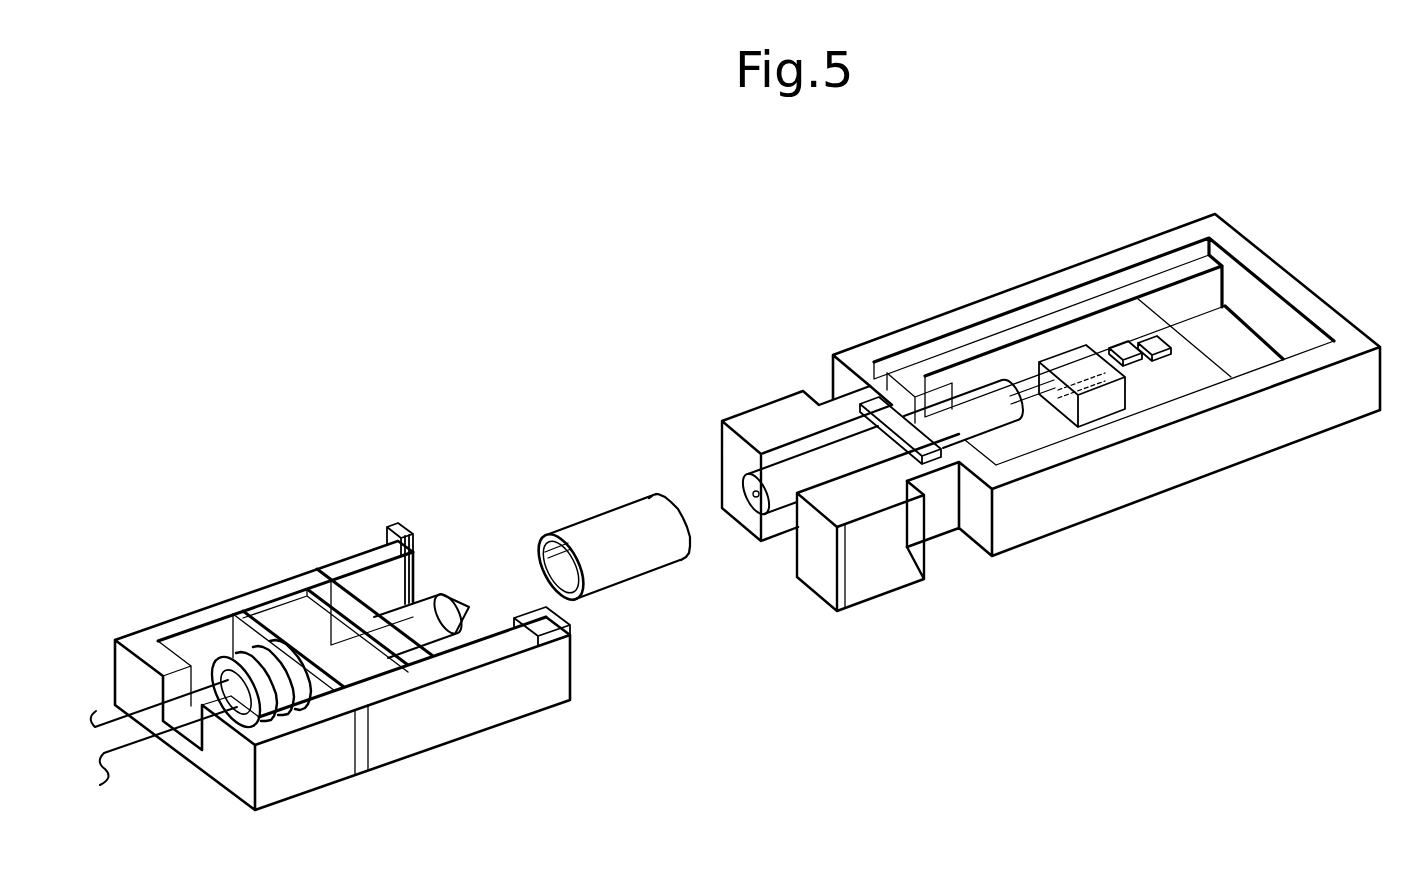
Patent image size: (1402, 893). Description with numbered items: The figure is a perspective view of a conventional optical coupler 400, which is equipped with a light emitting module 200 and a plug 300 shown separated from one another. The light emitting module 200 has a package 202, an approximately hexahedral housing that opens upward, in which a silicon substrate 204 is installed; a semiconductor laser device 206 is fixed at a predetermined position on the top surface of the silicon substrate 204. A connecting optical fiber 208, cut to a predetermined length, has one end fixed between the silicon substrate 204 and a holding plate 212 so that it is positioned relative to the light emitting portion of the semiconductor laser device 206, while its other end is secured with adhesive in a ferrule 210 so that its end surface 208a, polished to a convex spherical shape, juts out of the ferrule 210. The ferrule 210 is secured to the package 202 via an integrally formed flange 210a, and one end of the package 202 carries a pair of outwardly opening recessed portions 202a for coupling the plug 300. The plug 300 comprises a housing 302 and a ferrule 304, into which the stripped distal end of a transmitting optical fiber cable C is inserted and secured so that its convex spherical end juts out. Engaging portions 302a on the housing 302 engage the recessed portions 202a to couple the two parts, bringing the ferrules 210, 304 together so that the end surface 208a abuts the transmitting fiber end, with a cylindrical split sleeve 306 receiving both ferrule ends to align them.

The optical coupler 400 is at (590, 342).
The light emitting module 200 is at (679, 388).
The package 202 is at (1268, 278).
The recessed portions 202a is at (845, 356).
The silicon substrate 204 is at (1137, 318).
The semiconductor laser device 206 is at (1122, 345).
The connecting optical fiber 208 is at (1033, 405).
The end surface 208a is at (752, 503).
The ferrule 210 is at (797, 470).
The flange 210a is at (880, 408).
The holding plate 212 is at (1062, 357).
The plug 300 is at (455, 463).
The housing 302 is at (463, 720).
The engaging portions 302a is at (417, 567).
The ferrule 304 is at (397, 618).
The split sleeve 306 is at (618, 533).
The transmitting optical fiber cable C is at (100, 727).